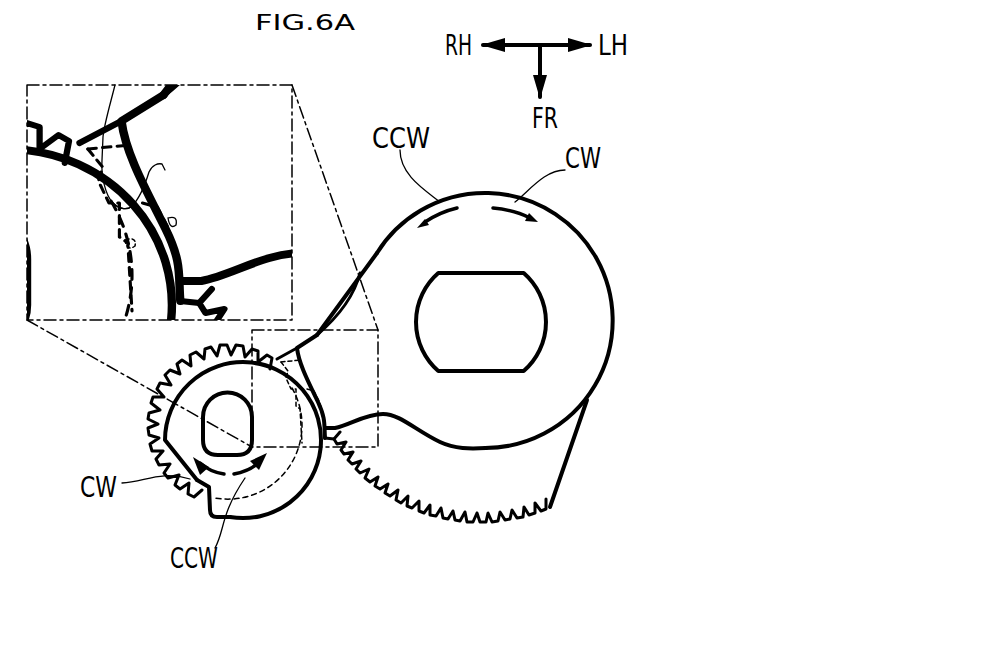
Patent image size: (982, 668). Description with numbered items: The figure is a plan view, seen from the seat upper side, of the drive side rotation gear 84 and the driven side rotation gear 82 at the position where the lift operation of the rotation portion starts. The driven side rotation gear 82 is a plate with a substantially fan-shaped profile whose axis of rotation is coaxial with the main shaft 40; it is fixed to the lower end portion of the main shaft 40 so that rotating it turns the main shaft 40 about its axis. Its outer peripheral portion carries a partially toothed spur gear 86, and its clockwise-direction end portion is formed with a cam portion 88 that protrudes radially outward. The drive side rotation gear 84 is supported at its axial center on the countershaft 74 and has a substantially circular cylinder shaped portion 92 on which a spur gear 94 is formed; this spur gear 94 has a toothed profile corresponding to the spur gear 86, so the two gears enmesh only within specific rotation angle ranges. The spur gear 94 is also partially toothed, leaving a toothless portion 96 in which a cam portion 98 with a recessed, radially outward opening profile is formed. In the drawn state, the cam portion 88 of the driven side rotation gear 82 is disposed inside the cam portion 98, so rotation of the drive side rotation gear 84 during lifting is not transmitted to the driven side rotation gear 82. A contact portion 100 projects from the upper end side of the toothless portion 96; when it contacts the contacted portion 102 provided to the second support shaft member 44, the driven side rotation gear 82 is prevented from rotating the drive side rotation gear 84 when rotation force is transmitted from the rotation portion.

The main shaft 40 is at (547, 313).
The second support shaft member 44 is at (545, 438).
The countershaft 74 is at (210, 400).
The driven side rotation gear 82 is at (486, 495).
The drive side rotation gear 84 is at (143, 405).
The spur gear 86 is at (460, 518).
The cam portion 88 is at (115, 85).
The cylinder shaped portion 92 is at (180, 452).
The spur gear 94 is at (195, 498).
The toothless portion 96 is at (288, 482).
The cam portion 98 is at (123, 250).
The contact portion 100 is at (130, 207).
The contacted portion 102 is at (177, 222).